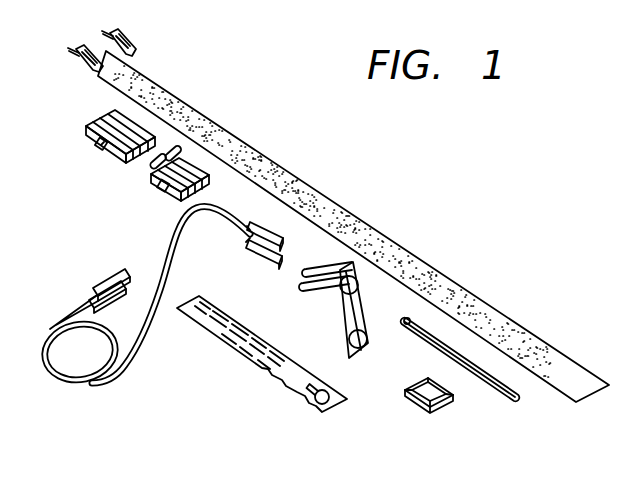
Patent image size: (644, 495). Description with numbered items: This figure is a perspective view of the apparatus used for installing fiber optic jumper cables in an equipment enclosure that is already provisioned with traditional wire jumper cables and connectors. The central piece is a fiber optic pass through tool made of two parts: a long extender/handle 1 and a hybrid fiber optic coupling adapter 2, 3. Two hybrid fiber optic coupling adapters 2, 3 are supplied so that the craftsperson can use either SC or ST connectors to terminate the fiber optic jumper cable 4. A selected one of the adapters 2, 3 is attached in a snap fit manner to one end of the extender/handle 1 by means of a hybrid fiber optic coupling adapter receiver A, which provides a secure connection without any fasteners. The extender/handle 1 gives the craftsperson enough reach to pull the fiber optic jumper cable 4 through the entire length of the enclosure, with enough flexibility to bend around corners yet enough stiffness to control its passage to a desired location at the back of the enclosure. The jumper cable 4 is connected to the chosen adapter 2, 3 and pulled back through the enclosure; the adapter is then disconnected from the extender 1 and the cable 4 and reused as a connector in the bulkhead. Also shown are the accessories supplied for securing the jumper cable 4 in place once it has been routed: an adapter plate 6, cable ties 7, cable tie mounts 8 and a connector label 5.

The extender/handle 1 is at (362, 216).
The hybrid fiber optic coupling adapter receiver A is at (134, 50).
The hybrid fiber optic coupling adapter 2 is at (100, 143).
The hybrid fiber optic coupling adapter 3 is at (158, 182).
The fiber optic jumper cable 4 is at (163, 263).
The connector label 5 is at (229, 315).
The adapter plate 6 is at (362, 300).
The cable ties 7 is at (498, 391).
The cable tie mounts 8 is at (410, 400).